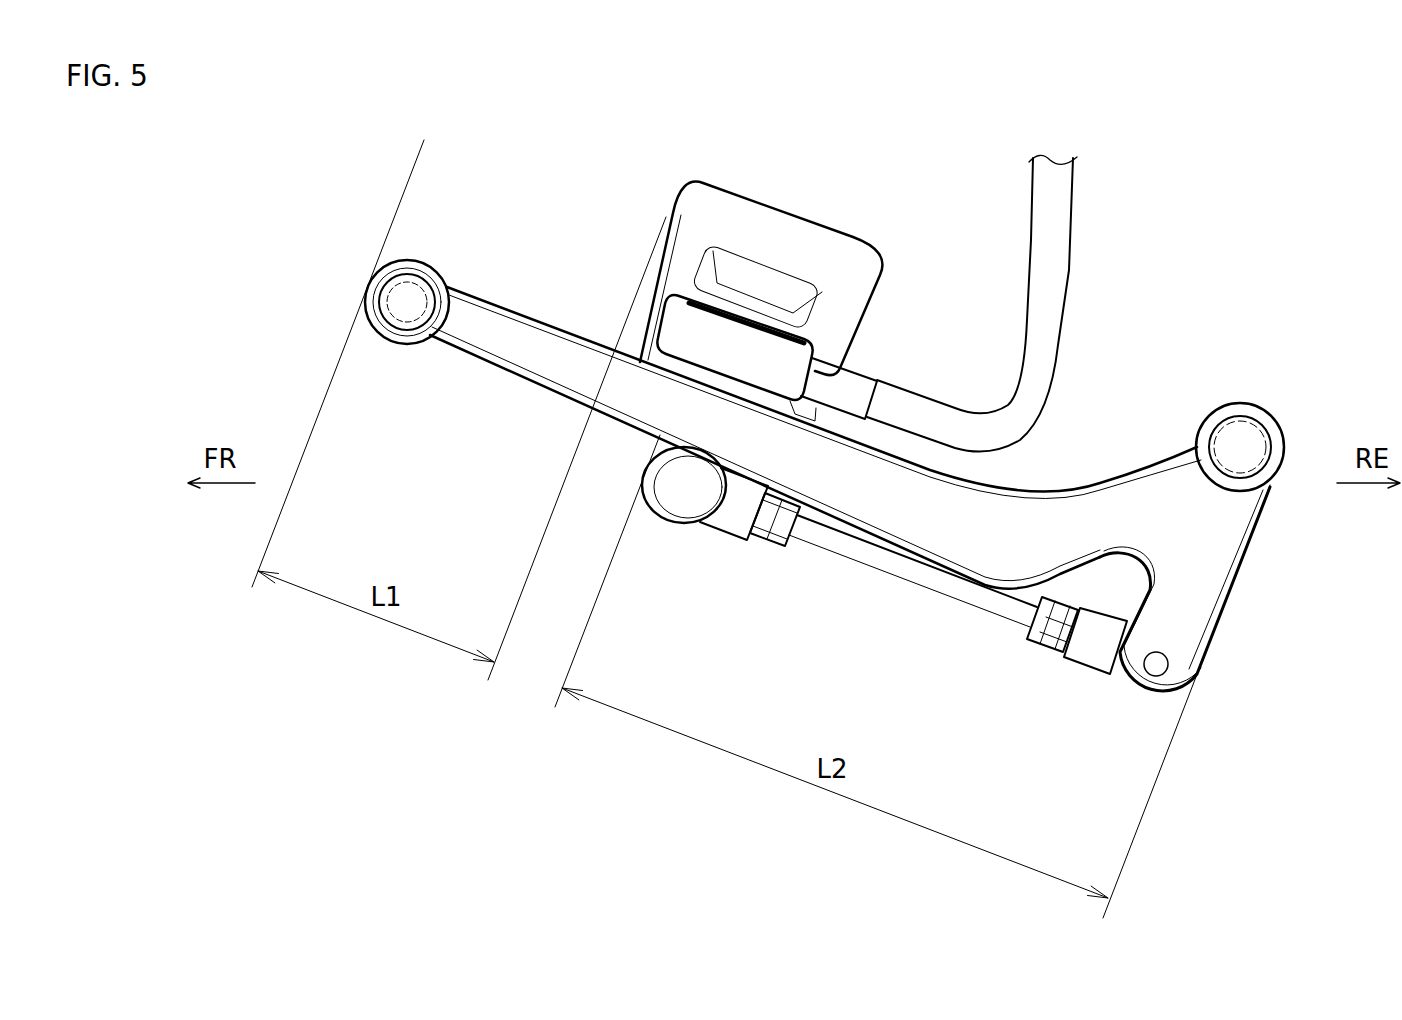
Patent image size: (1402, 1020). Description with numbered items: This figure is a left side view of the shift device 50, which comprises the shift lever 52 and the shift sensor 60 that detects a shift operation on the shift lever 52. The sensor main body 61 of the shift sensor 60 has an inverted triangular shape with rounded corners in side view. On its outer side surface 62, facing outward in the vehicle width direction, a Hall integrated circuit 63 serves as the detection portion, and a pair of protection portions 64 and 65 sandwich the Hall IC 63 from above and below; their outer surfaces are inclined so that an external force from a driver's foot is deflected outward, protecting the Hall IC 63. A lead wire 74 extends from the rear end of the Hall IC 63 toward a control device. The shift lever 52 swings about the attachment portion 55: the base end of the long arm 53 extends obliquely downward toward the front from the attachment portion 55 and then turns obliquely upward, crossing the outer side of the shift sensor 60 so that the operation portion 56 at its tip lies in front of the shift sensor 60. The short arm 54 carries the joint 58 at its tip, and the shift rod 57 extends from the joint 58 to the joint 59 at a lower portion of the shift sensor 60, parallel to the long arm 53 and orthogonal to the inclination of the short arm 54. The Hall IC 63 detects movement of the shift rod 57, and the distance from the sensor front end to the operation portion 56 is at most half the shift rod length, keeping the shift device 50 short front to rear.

The shift device 50 is at (472, 125).
The shift lever 52 is at (539, 409).
The long arm 53 is at (857, 492).
The short arm 54 is at (1183, 634).
The attachment portion 55 is at (1262, 412).
The operation portion 56 is at (418, 262).
The shift rod 57 is at (927, 580).
The joint 58 is at (1146, 710).
The joint 59 is at (673, 508).
The shift sensor 60 is at (678, 177).
The sensor main body 61 is at (878, 307).
The outer side surface 62 is at (677, 228).
The Hall integrated circuit 63 is at (680, 318).
The upper protection portion 64 is at (770, 283).
The lower protection portion 65 is at (697, 377).
The lead wire 74 is at (1065, 292).